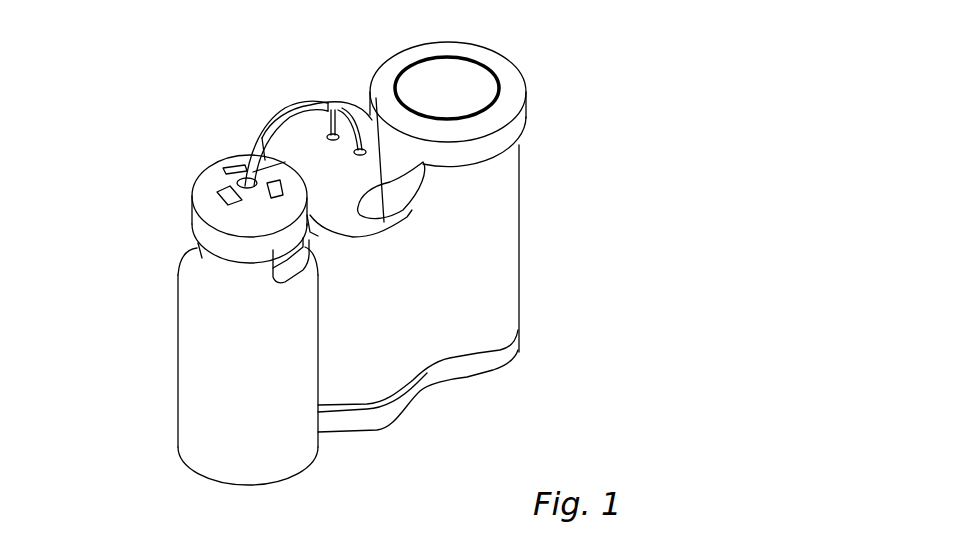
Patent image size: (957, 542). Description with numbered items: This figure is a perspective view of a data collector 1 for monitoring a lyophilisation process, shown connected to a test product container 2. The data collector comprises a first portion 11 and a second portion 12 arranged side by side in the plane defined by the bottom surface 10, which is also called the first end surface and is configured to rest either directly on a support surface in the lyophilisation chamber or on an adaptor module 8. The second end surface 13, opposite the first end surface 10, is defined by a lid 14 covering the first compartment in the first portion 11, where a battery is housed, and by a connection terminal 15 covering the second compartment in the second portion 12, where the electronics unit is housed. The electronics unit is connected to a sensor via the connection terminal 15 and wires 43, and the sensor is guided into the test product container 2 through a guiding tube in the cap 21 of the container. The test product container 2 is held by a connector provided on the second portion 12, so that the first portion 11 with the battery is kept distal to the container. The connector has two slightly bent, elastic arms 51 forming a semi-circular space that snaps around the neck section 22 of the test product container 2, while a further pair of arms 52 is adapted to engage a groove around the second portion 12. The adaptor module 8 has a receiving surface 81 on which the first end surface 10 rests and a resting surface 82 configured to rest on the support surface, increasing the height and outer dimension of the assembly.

The data collector 1 is at (506, 176).
The test product container 2 is at (176, 317).
The adaptor module 8 is at (477, 416).
The bottom surface 10 is at (482, 350).
The first portion 11 is at (493, 230).
The second portion 12 is at (370, 368).
The second end surface 13 is at (477, 57).
The lid 14 is at (470, 90).
The connection terminal 15 is at (307, 138).
The cap 21 is at (200, 207).
The neck section 22 is at (193, 250).
The wires 43 is at (260, 137).
The arms 51 is at (275, 268).
The pair of arms 52 is at (370, 100).
The receiving surface 81 is at (451, 362).
The resting surface 82 is at (500, 367).